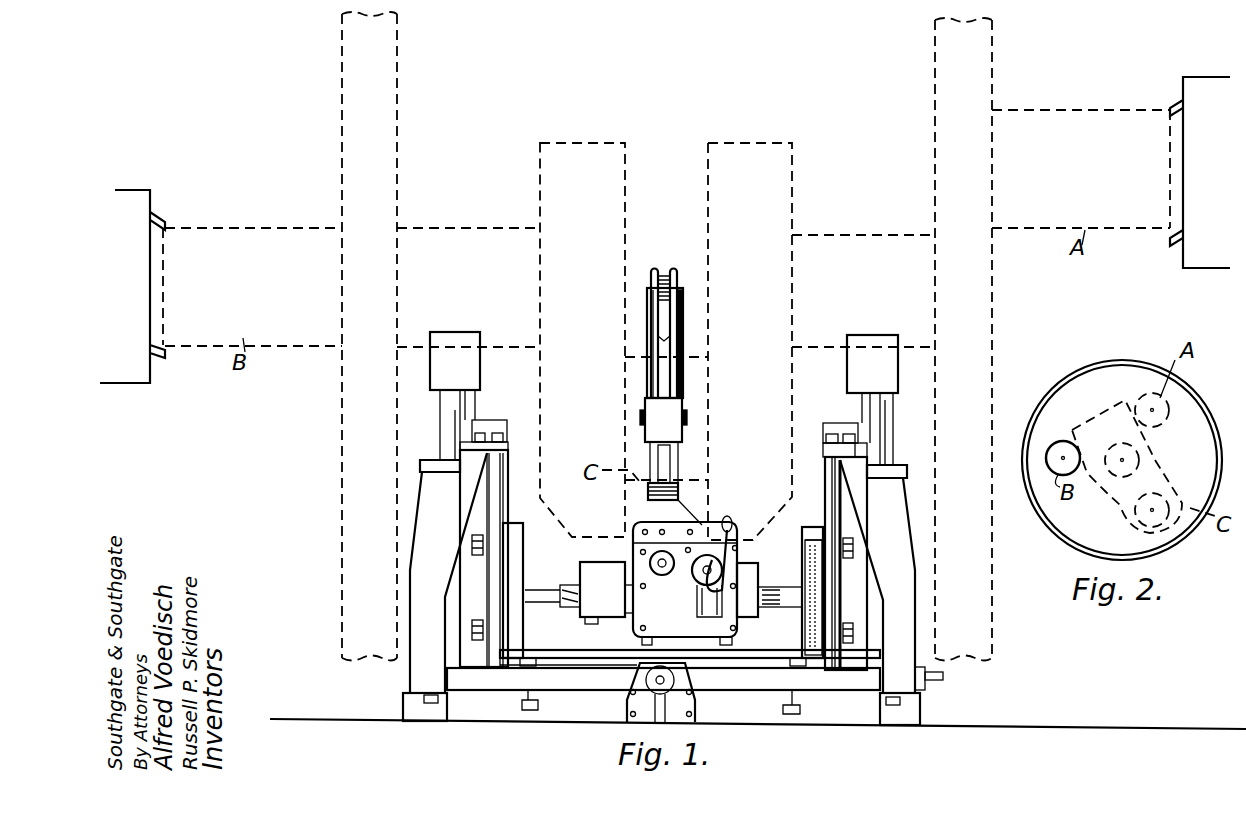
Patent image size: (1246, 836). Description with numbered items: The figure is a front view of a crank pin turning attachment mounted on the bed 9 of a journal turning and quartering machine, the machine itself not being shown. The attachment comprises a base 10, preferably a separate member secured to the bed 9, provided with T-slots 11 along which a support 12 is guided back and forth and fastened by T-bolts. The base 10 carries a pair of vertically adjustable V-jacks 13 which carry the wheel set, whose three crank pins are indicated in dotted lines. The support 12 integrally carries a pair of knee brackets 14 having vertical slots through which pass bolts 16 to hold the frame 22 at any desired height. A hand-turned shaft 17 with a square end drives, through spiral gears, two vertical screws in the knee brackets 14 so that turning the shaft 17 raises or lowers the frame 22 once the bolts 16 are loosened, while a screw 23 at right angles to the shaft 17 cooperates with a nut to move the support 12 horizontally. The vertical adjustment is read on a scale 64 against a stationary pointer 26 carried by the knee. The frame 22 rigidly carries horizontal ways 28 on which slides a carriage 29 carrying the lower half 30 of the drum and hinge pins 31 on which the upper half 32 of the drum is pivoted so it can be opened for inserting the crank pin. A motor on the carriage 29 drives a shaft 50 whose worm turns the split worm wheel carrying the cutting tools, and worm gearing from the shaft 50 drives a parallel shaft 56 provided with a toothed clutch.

The bed 9 is at (998, 727).
The base 10 is at (850, 712).
The T-slots 11 is at (522, 704).
The support 12 is at (575, 680).
The V-jacks 13 is at (480, 380).
The knee brackets 14 is at (497, 508).
The bolts 16 is at (472, 543).
The shaft 17 is at (945, 678).
The frame 22 is at (515, 545).
The screw 23 is at (655, 686).
The stationary pointer 26 is at (813, 545).
The horizontal ways 28 is at (567, 580).
The carriage 29 is at (648, 500).
The lower half of the drum 30 is at (680, 502).
The hinge pins 31 is at (640, 412).
The upper half of the drum 32 is at (672, 268).
The shaft 50 is at (662, 567).
The shaft 56 is at (705, 575).
The scale 64 is at (810, 615).